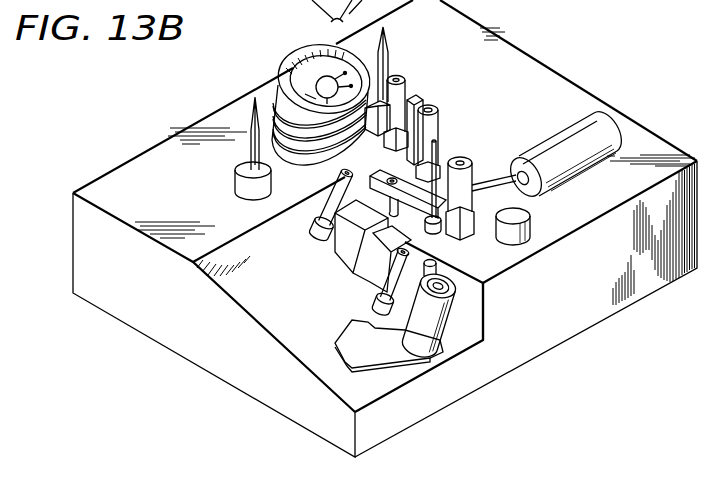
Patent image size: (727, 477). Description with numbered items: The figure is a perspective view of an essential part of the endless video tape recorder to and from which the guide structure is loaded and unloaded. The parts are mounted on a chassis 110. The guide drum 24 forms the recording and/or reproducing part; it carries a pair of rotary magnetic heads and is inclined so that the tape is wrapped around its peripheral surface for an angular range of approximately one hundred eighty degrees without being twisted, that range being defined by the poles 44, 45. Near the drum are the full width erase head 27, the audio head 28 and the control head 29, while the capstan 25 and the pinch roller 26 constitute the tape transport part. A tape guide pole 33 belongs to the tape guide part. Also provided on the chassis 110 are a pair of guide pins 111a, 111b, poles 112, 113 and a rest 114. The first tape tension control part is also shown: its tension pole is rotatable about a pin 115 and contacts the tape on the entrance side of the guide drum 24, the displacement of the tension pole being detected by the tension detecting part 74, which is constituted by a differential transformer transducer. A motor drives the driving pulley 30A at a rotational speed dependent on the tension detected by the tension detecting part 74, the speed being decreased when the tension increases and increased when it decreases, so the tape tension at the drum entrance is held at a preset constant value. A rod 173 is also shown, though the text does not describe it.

The chassis 110 is at (200, 343).
The tape guide pole 33 is at (333, 22).
The guide drum 24 is at (295, 56).
The guide pin 111a is at (251, 149).
The guide pin 111b is at (387, 42).
The pole 44 is at (398, 78).
The full width erase head 27 is at (423, 97).
The pole 113 is at (437, 114).
The rod 173 is at (438, 143).
The pin 115 is at (398, 172).
The driving pulley 30A is at (470, 167).
The tension detecting part 74 is at (598, 127).
The rest 114 is at (525, 221).
The pole 45 is at (317, 233).
The audio head 28 is at (337, 252).
The control head 29 is at (363, 282).
The pole 112 is at (333, 318).
The capstan 25 is at (484, 289).
The pinch roller 26 is at (452, 305).